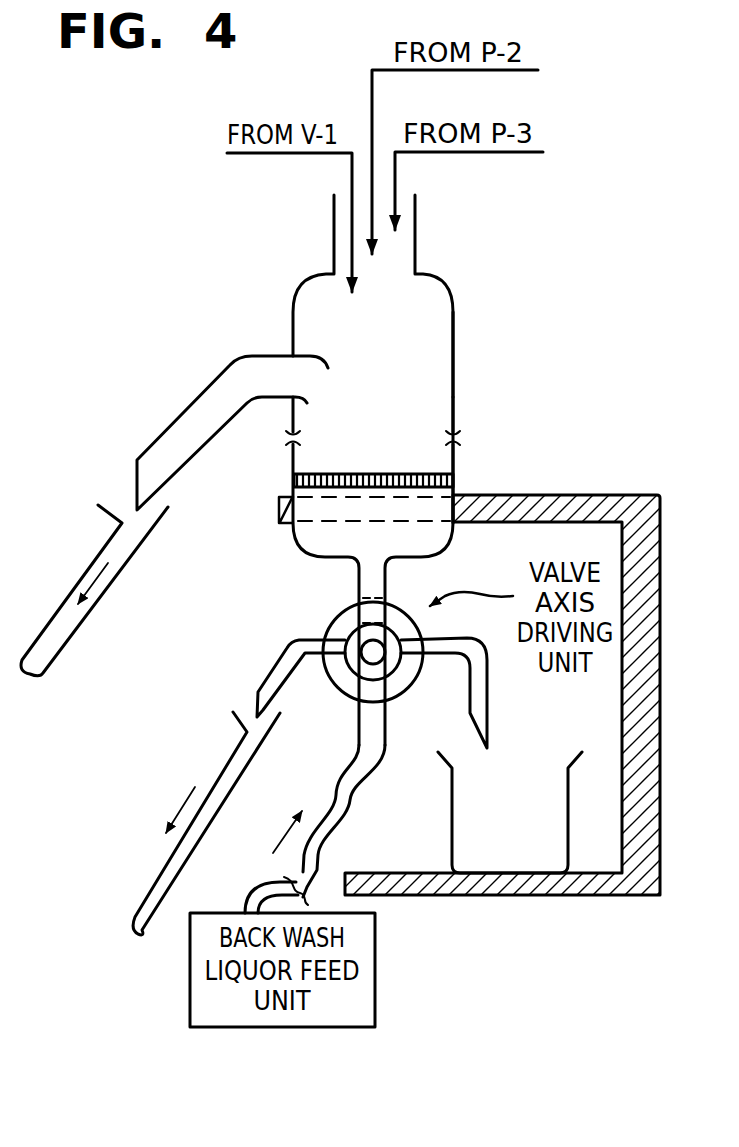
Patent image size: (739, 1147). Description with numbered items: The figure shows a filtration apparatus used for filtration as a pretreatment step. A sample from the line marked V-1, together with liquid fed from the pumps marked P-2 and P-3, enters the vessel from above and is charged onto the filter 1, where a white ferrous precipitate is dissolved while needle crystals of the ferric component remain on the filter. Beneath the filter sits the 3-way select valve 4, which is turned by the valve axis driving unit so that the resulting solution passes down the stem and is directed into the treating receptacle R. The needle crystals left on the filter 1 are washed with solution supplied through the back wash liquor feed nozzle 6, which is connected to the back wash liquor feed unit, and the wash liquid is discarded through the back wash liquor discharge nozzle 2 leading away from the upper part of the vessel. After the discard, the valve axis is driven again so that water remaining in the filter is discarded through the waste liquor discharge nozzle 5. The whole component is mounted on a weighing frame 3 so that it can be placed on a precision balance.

The filter 1 is at (377, 473).
The back wash liquor discharge nozzle 2 is at (185, 408).
The weighing frame 3 is at (510, 495).
The 3-way select valve 4 is at (337, 620).
The waste liquor discharge nozzle 5 is at (272, 670).
The back wash liquor feed nozzle 6 is at (359, 720).
The treating receptacle R is at (568, 817).